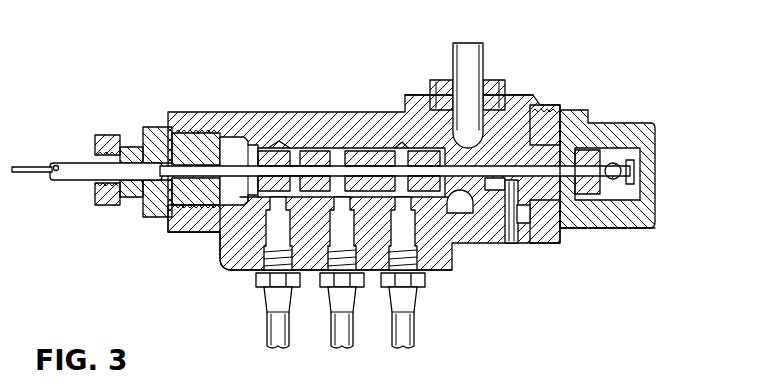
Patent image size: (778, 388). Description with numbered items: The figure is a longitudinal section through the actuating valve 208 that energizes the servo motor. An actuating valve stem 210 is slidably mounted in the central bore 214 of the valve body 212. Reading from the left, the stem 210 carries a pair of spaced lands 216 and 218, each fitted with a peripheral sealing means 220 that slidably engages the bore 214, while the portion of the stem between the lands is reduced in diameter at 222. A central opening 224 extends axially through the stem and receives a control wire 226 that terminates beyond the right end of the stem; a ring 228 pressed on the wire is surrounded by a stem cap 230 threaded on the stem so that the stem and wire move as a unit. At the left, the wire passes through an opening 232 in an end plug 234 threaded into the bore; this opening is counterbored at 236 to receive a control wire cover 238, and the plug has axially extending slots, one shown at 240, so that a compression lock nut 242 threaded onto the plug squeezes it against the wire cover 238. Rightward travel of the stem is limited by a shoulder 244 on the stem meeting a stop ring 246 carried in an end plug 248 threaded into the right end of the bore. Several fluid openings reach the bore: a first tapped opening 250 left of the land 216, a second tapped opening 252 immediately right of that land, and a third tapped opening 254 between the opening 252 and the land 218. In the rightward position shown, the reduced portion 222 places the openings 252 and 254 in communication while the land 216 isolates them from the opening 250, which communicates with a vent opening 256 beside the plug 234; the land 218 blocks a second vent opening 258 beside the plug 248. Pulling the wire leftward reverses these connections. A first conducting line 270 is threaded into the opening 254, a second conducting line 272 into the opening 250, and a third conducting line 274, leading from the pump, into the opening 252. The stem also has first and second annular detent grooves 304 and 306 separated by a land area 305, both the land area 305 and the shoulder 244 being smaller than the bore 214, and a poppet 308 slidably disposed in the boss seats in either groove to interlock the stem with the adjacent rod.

The actuating valve 208 is at (325, 60).
The actuating valve stem 210 is at (268, 140).
The valve body 212 is at (168, 227).
The central bore 214 is at (373, 193).
The land 216 is at (318, 153).
The land 218 is at (413, 148).
The peripheral sealing means 220 is at (290, 148).
The reduced diameter portion 222 is at (333, 148).
The central opening 224 is at (367, 172).
The control wire 226 is at (347, 173).
The ring 228 is at (616, 189).
The stem cap 230 is at (612, 228).
The opening 232 is at (174, 168).
The end plug 234 is at (150, 132).
The counterbore 236 is at (130, 163).
The control wire cover 238 is at (67, 165).
The axially extending slot 240 is at (97, 187).
The compression lock nut 242 is at (95, 138).
The shoulder 244 is at (541, 240).
The stop ring 246 is at (572, 110).
The end plug 248 is at (612, 125).
The first tapped opening 250 is at (258, 258).
The second tapped opening 252 is at (313, 258).
The third tapped opening 254 is at (382, 257).
The vent opening 256 is at (218, 235).
The second vent opening 258 is at (510, 237).
The first conducting line 270 is at (400, 327).
The second conducting line 272 is at (275, 330).
The third conducting line 274 is at (337, 330).
The first detent groove 304 is at (474, 195).
The land area 305 is at (508, 107).
The second detent groove 306 is at (505, 207).
The poppet 308 is at (470, 55).